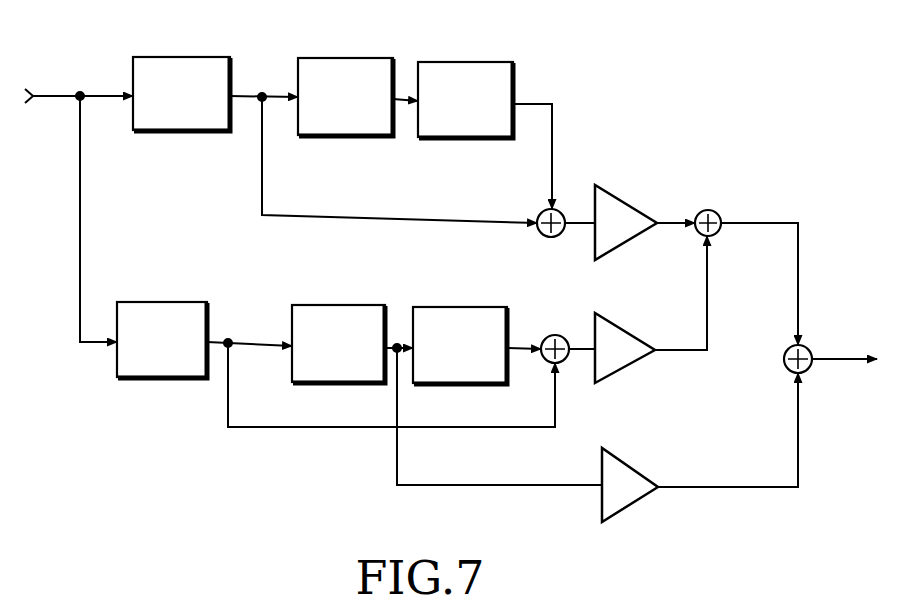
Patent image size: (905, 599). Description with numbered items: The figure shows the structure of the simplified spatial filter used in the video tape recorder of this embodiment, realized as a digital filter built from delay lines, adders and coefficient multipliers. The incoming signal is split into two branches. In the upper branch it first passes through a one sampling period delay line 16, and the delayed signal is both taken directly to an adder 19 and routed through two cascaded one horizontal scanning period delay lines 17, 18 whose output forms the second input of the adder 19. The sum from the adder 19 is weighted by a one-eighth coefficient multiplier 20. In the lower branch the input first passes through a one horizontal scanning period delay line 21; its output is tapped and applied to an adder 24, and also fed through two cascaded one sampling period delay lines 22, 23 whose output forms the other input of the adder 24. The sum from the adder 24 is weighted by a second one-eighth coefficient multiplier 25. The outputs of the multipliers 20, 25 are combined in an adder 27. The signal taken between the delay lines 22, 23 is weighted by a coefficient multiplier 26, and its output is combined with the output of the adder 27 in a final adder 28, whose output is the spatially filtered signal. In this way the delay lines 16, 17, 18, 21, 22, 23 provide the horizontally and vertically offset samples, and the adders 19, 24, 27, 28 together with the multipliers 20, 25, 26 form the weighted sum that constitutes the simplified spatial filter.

The one sampling period (D) delay line 16 is at (189, 57).
The one horizontal scanning period (H) delay line 17 is at (361, 58).
The one horizontal scanning period (H) delay line 18 is at (470, 62).
The adder 19 is at (545, 236).
The one-eighth coefficient multiplier 20 is at (630, 204).
The one horizontal scanning period (H) delay line 21 is at (181, 302).
The one sampling period (D) delay line 22 is at (350, 305).
The one sampling period (D) delay line 23 is at (454, 307).
The adder 24 is at (555, 335).
The one-eighth coefficient multiplier 25 is at (632, 330).
The one-quarter coefficient multiplier 26 is at (640, 466).
The adder 27 is at (718, 213).
The adder 28 is at (808, 350).